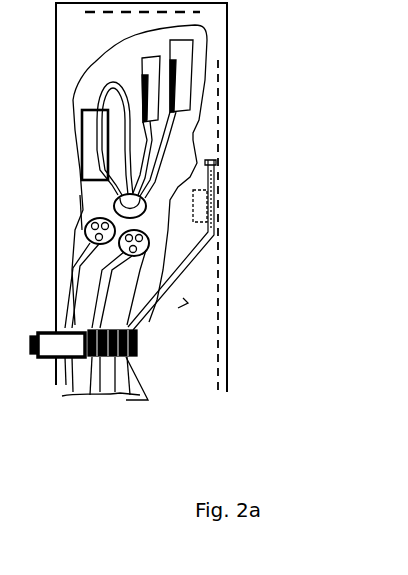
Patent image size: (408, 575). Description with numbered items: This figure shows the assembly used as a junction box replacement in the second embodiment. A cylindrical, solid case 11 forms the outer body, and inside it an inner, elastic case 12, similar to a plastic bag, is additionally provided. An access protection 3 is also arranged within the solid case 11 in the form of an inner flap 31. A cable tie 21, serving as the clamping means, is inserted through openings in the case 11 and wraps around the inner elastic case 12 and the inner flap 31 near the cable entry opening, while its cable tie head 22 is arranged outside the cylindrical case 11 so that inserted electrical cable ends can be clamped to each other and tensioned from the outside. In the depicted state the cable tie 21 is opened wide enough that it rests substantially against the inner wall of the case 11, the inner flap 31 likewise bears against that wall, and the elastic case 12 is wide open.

The cylindrical case 11 is at (228, 63).
The inner elastic case 12 is at (187, 135).
The access protection 3 is at (190, 267).
The inner flap 31 is at (180, 305).
The cable tie 21 is at (135, 338).
The cable tie head 22 is at (43, 360).